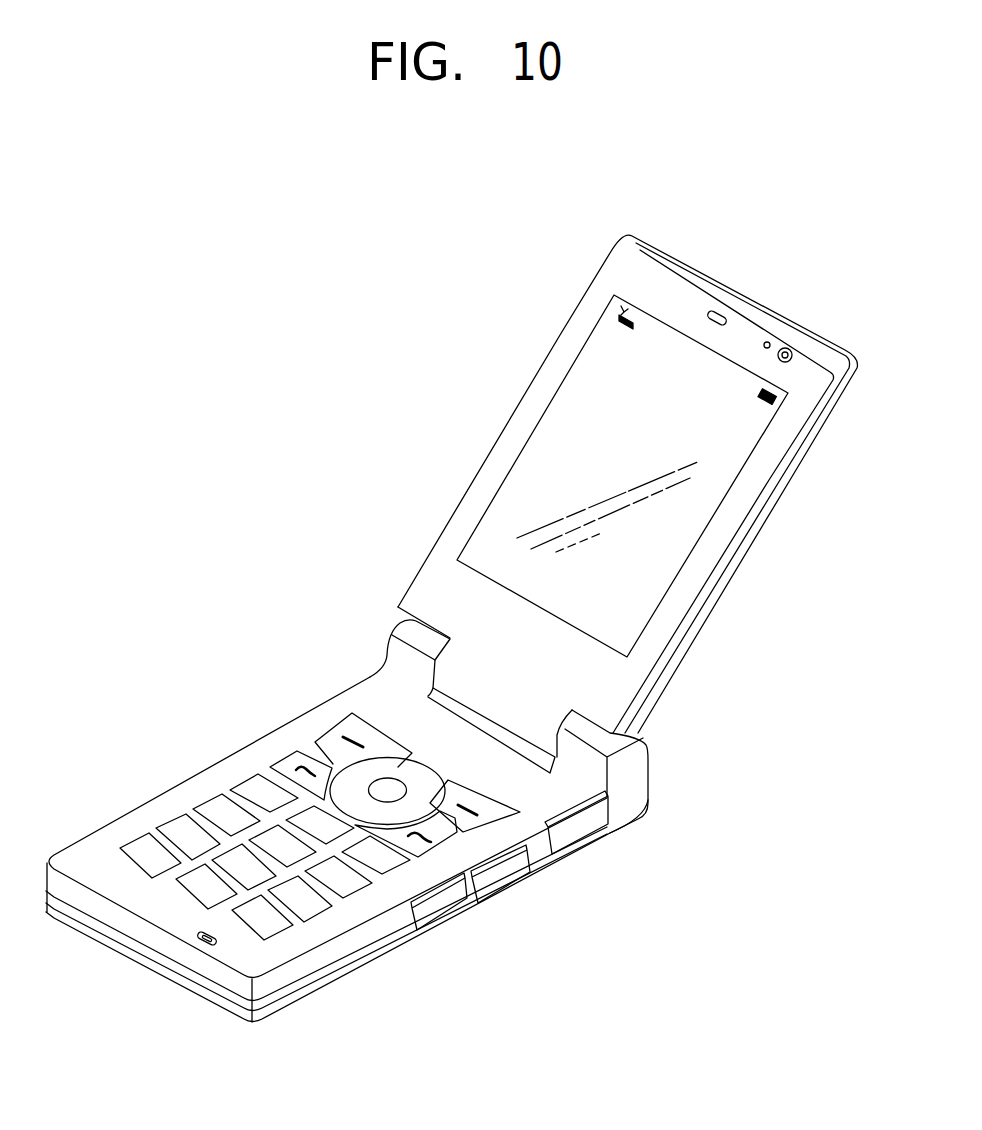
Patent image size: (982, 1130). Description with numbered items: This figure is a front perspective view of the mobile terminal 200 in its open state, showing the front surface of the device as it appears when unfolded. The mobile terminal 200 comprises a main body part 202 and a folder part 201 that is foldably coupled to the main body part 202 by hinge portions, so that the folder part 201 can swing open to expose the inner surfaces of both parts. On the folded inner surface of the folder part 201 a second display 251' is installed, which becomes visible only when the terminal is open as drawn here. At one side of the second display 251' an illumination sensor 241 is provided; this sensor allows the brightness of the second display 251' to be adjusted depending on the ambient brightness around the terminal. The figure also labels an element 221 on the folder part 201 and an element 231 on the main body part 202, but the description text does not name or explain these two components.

The mobile terminal 200 is at (218, 448).
The folder part 201 is at (463, 473).
The main body part 202 is at (127, 798).
The camera 221 is at (790, 350).
The keypad / manipulating unit 231 is at (215, 808).
The illumination sensor 241 is at (768, 341).
The second display 251' is at (620, 476).